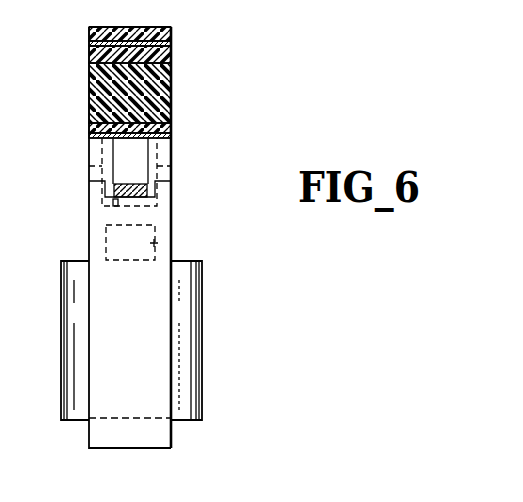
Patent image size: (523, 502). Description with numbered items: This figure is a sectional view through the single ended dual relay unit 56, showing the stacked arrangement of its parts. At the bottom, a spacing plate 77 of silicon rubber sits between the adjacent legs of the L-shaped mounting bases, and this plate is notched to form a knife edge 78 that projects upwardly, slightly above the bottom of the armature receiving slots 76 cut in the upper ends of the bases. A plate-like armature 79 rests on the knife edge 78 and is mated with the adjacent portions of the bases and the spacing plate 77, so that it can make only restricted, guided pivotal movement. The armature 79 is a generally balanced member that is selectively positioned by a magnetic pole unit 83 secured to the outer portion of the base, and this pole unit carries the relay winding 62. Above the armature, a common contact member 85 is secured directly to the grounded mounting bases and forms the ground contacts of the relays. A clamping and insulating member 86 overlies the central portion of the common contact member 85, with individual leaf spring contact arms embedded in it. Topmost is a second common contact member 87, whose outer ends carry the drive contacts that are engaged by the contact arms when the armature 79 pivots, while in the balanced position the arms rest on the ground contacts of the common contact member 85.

The transducer assembly 56 is at (60, 348).
The relay winding 62 is at (188, 300).
The armature receiving slot 76 is at (110, 203).
The spacing plate 77 is at (160, 373).
The knife edge 78 is at (131, 197).
The armature 79 is at (140, 184).
The magnetic pole unit 83 is at (158, 243).
The common contact member 85 is at (158, 136).
The clamping and insulating member 86 is at (158, 99).
The common contact member 87 is at (167, 41).